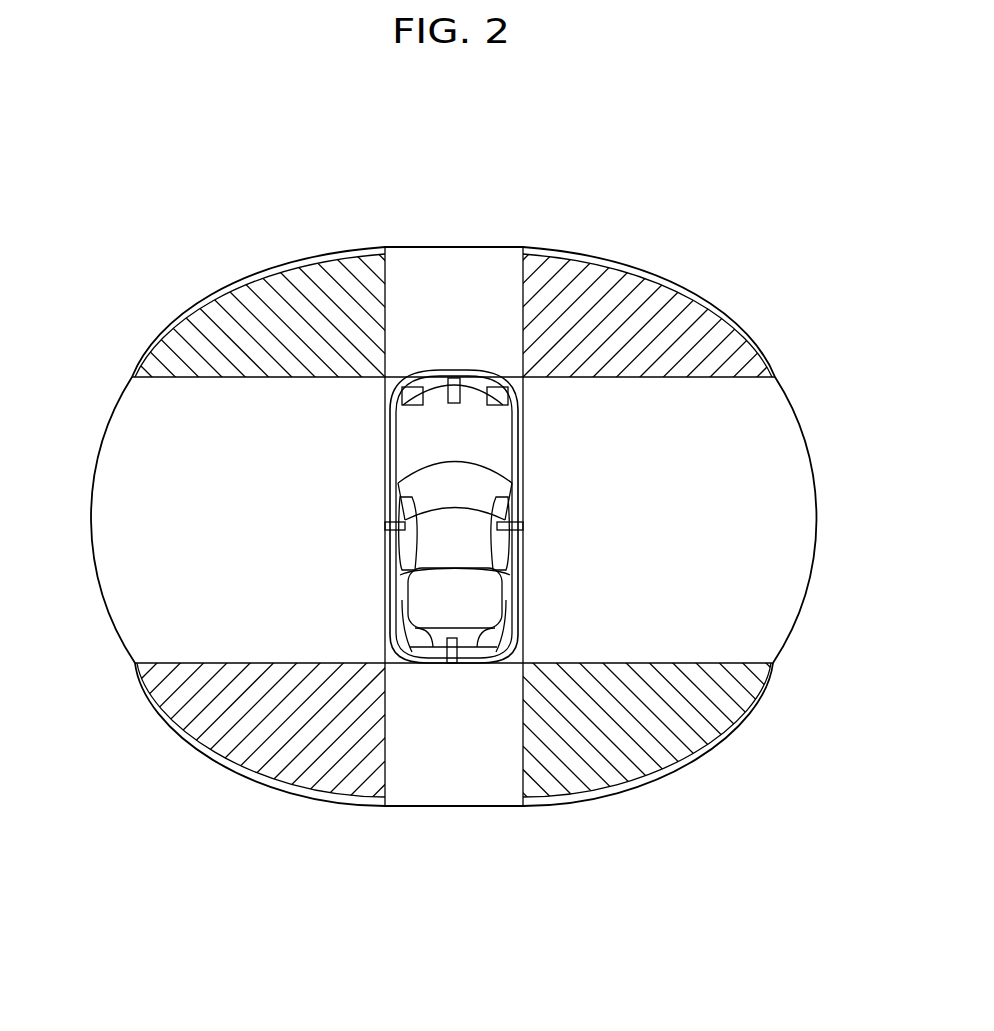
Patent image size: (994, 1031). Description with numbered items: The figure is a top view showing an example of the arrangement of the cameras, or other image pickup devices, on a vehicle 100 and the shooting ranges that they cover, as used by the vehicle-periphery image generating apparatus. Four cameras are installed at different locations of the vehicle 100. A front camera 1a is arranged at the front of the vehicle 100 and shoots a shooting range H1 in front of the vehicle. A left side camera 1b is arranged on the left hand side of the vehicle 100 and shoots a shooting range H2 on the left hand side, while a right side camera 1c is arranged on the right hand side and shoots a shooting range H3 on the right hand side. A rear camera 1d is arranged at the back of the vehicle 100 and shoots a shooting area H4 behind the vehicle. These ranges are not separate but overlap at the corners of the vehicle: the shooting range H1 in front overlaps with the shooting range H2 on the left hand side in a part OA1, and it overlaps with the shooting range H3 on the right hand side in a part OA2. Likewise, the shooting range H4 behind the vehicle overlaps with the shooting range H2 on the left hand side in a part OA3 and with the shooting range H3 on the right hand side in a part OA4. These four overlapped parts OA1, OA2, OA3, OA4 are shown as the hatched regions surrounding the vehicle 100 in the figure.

The vehicle 100 is at (390, 592).
The front camera 1a is at (455, 372).
The left side camera 1b is at (400, 542).
The right side camera 1c is at (497, 520).
The rear camera 1d is at (455, 653).
The shooting range in front H1 is at (757, 328).
The shooting range on the left hand side H2 is at (100, 452).
The shooting range on the right hand side H3 is at (816, 508).
The shooting range behind the vehicle H4 is at (467, 800).
The overlapped part OA1 is at (270, 298).
The overlapped part OA2 is at (607, 282).
The overlapped part OA3 is at (282, 780).
The overlapped part OA4 is at (625, 765).